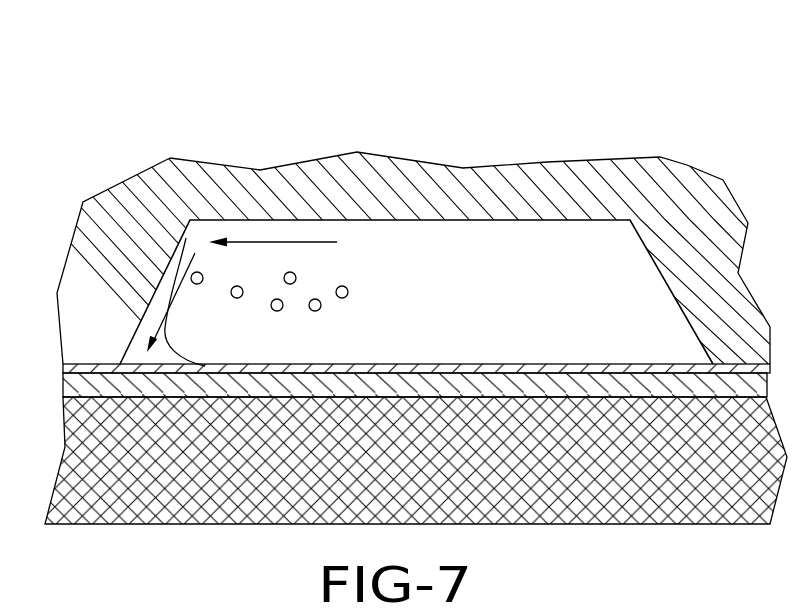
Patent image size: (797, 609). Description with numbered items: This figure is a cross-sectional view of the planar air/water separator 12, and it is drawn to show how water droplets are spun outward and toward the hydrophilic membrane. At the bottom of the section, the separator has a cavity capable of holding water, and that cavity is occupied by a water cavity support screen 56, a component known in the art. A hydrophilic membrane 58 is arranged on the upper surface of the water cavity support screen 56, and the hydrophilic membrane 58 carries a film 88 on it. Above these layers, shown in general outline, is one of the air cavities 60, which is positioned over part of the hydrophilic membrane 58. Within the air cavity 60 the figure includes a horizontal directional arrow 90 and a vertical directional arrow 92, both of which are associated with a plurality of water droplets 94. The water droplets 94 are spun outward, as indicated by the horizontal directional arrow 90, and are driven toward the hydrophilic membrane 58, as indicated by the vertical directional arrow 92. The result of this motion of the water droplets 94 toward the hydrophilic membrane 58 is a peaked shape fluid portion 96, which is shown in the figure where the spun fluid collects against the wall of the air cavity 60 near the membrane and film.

The planar air/water separator 12 is at (727, 141).
The water cavity support screen 56 is at (585, 465).
The hydrophilic membrane 58 is at (563, 387).
The air cavity 60 is at (493, 257).
The film 88 is at (477, 370).
The horizontal directional arrow 90 is at (282, 242).
The vertical directional arrow 92 is at (190, 275).
The water droplets 94 is at (347, 287).
The peaked shape fluid portion 96 is at (173, 348).